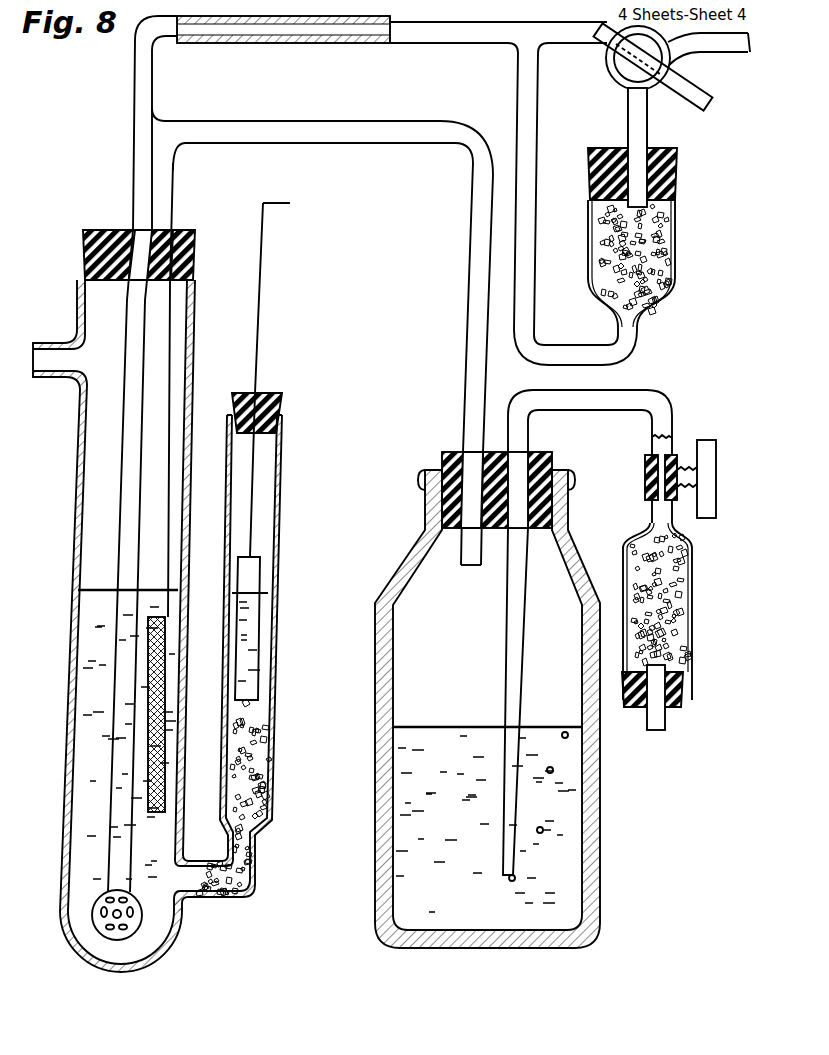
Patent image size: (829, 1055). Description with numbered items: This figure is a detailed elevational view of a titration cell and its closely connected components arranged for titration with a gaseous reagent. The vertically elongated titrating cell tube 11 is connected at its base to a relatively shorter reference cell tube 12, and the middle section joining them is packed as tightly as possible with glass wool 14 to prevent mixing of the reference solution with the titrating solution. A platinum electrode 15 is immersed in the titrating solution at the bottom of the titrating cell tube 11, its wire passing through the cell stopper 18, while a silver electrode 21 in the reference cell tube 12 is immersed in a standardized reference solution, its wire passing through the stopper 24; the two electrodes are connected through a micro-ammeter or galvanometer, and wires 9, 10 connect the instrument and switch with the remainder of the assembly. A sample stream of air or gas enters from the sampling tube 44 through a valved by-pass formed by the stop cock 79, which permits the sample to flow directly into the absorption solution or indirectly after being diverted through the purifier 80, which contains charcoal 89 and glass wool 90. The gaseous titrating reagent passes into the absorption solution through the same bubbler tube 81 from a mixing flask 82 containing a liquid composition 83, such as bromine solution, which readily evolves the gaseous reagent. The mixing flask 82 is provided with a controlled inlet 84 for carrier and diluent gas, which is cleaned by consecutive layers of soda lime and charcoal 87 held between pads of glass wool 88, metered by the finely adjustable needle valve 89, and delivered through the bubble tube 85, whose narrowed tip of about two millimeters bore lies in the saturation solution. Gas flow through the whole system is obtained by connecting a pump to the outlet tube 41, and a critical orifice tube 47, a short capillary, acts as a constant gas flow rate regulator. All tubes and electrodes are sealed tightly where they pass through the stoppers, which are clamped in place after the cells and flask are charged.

The wire 9 is at (173, 163).
The wire 10 is at (261, 340).
The titrating cell tube 11 is at (92, 510).
The reference cell tube 12 is at (265, 470).
The glass wool 14 is at (255, 861).
The platinum electrode 15 is at (147, 753).
The cell stopper 18 is at (113, 248).
The silver electrode 21 is at (250, 673).
The stopper 24 is at (267, 415).
The outlet tube 41 is at (52, 357).
The sampling tube 44 is at (727, 45).
The critical orifice tube 47 is at (268, 28).
The stop cock 79 is at (625, 65).
The purifier 80 is at (678, 195).
The bubbler tube 81 is at (130, 453).
The mixing flask 82 is at (433, 565).
The liquid composition 83 is at (560, 913).
The controlled inlet 84 is at (660, 728).
The bubble tube 85 is at (507, 718).
The soda lime and charcoal layers 87 is at (687, 583).
The glass wool pads 88 is at (687, 550).
The needle valve 89 is at (660, 240).
The glass wool 90 is at (655, 307).